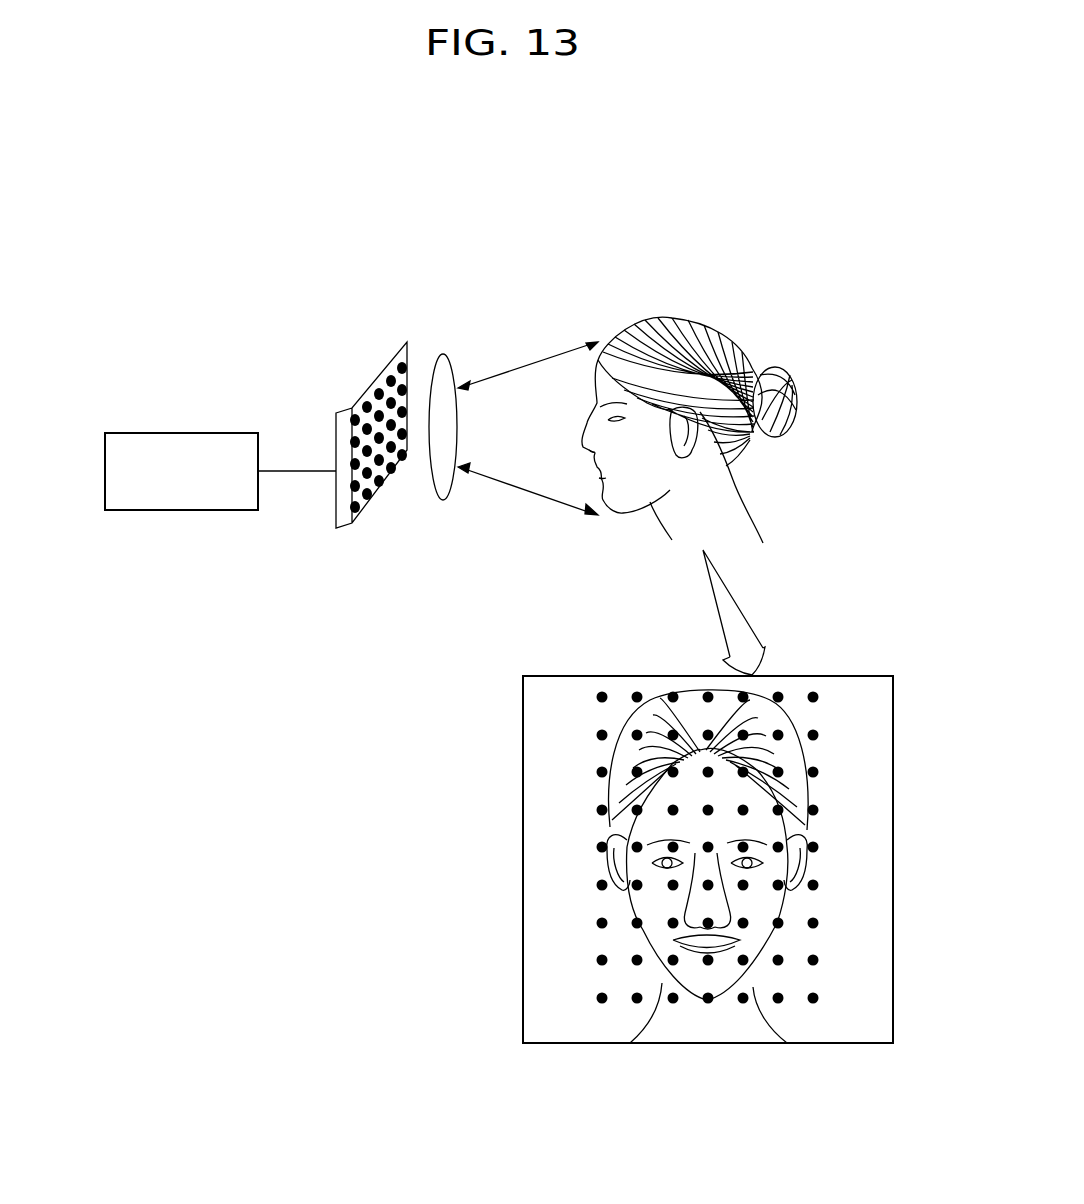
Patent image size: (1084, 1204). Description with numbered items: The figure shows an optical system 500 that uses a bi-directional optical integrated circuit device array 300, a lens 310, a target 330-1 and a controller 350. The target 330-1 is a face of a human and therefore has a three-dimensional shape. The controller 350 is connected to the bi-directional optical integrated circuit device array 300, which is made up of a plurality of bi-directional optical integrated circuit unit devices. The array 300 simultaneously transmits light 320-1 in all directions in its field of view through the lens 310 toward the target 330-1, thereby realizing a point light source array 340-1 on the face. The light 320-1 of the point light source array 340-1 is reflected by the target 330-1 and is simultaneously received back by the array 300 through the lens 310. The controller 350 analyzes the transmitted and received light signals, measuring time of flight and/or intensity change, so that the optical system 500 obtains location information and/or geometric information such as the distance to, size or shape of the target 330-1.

The optical system 500 is at (838, 252).
The controller 350 is at (187, 431).
The bi-directional optical integrated circuit device array 300 is at (366, 381).
The lens 310 is at (443, 352).
The light 320-1 is at (527, 363).
The target 330-1 is at (627, 500).
The point light source array 340-1 is at (596, 735).